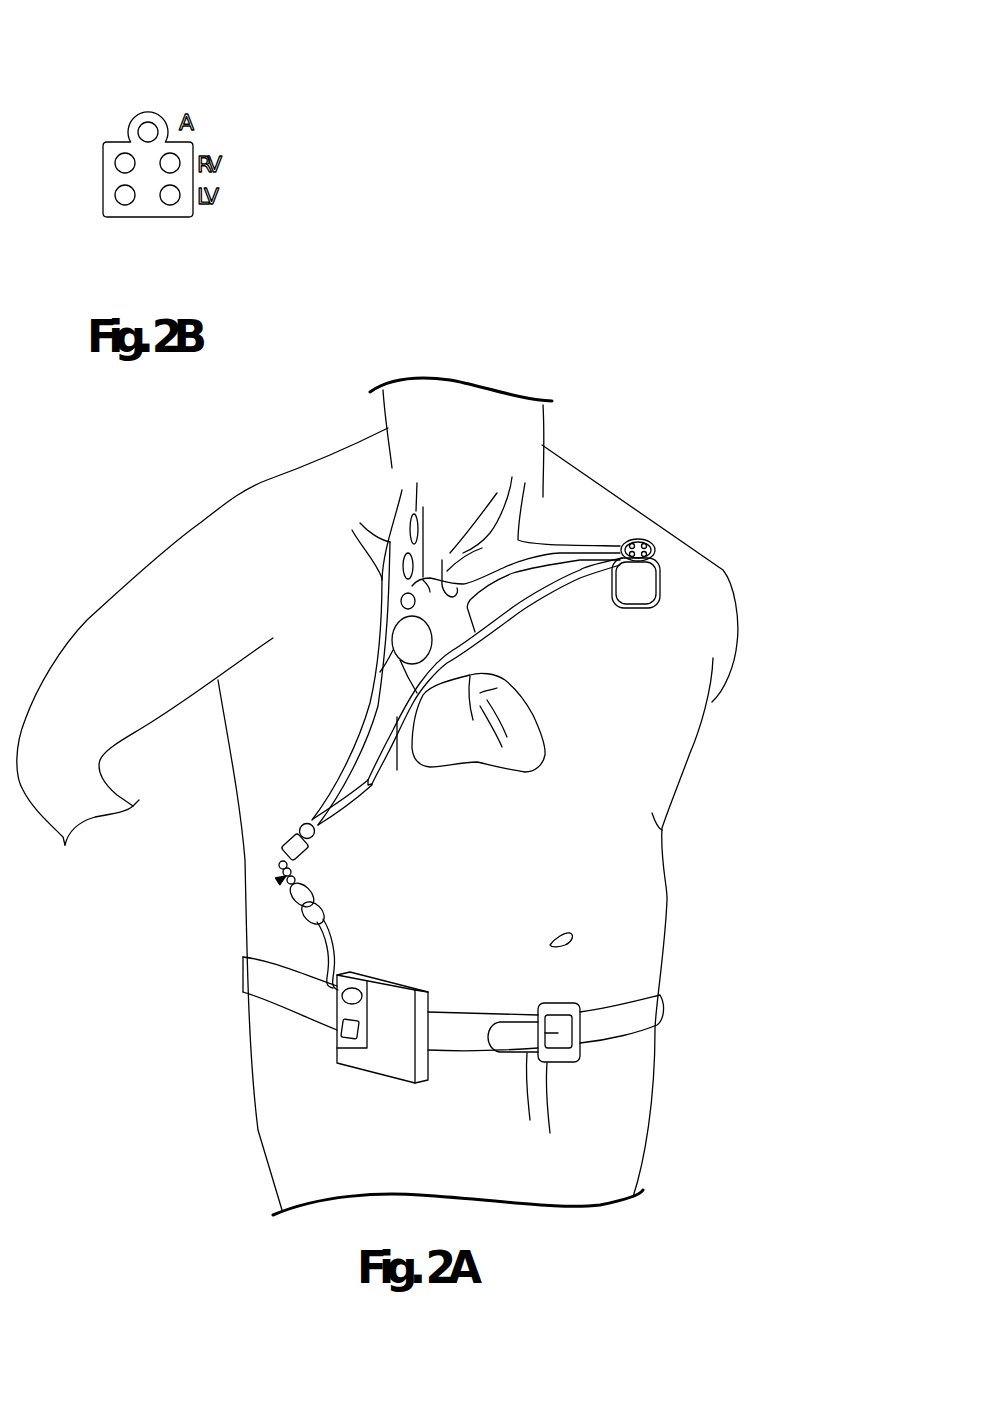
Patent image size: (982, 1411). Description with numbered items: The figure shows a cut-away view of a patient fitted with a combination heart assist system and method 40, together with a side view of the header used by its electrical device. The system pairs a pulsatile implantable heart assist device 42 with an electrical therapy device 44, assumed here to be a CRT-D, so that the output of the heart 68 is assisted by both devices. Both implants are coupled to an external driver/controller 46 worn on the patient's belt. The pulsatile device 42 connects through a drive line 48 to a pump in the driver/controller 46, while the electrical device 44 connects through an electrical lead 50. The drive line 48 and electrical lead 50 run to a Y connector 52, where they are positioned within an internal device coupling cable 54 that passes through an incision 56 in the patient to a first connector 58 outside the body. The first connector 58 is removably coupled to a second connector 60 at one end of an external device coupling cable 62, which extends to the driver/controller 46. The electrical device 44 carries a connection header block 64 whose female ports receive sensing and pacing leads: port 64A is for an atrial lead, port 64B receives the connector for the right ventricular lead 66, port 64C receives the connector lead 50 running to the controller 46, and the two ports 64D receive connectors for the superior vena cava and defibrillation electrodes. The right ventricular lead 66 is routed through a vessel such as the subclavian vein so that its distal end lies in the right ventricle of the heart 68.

In FIG. 2A, the system and method 40 is at (631, 413).
In FIG. 2A, the pulsatile implantable heart assist device 42 is at (403, 632).
In FIG. 2A, the electrical therapy device 44 is at (667, 561).
In FIG. 2A, the external driver/controller 46 is at (387, 1060).
In FIG. 2A, the drive line 48 is at (364, 698).
In FIG. 2A, the electrical lead 50 is at (585, 572).
In FIG. 2A, the Y connector 52 is at (330, 797).
In FIG. 2A, the internal device coupling cable 54 is at (281, 866).
In FIG. 2A, the incision 56 is at (278, 882).
In FIG. 2A, the first connector 58 is at (292, 896).
In FIG. 2A, the second connector 60 is at (306, 918).
In FIG. 2A, the external device coupling cable 62 is at (322, 946).
In FIG. 2B, the connection header block 64 is at (102, 112).
In FIG. 2A, the connection header block 64 is at (647, 538).
In FIG. 2B, the port 64A is at (155, 127).
In FIG. 2B, the port 64B is at (176, 158).
In FIG. 2B, the port 64C is at (167, 204).
In FIG. 2B, the ports 64D is at (117, 166).
In FIG. 2A, the right ventricular lead 66 is at (590, 545).
In FIG. 2A, the heart 68 is at (559, 756).